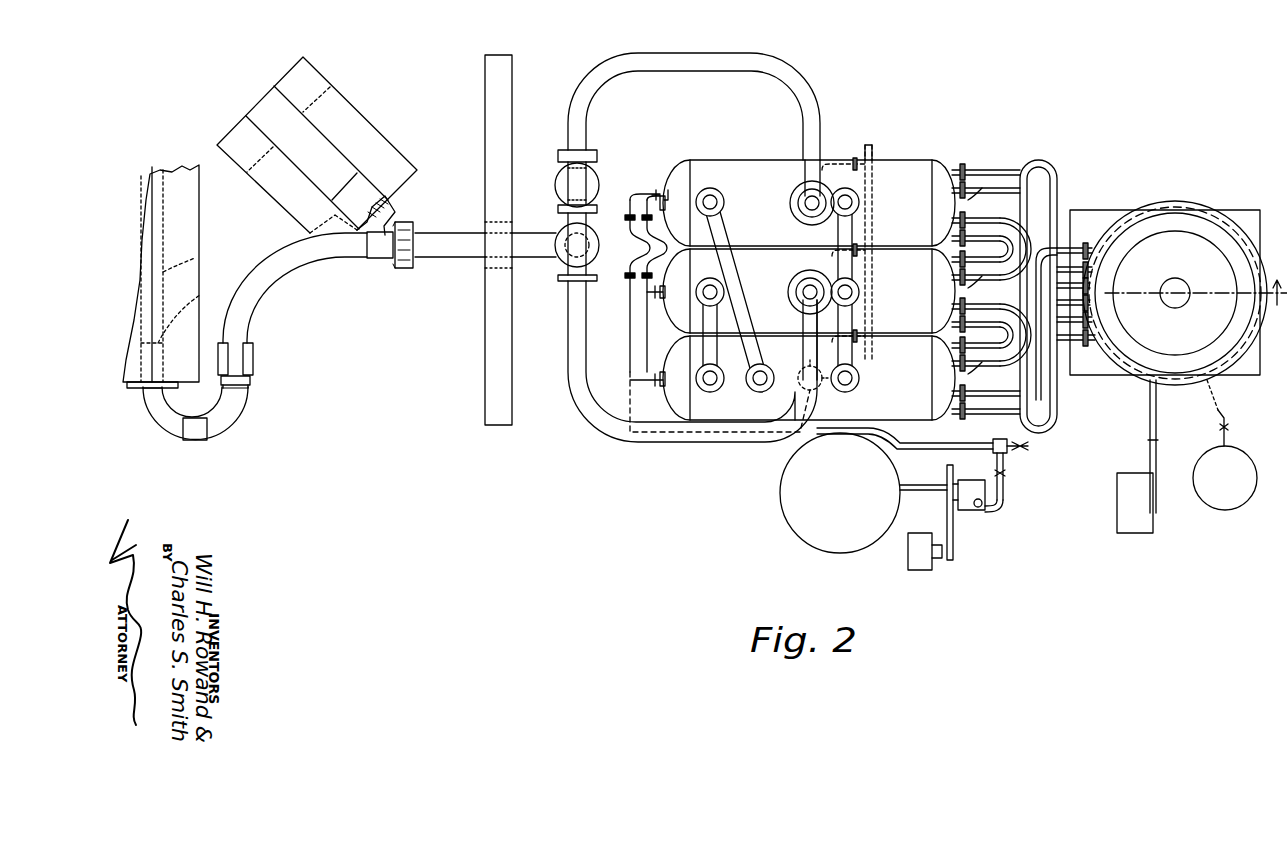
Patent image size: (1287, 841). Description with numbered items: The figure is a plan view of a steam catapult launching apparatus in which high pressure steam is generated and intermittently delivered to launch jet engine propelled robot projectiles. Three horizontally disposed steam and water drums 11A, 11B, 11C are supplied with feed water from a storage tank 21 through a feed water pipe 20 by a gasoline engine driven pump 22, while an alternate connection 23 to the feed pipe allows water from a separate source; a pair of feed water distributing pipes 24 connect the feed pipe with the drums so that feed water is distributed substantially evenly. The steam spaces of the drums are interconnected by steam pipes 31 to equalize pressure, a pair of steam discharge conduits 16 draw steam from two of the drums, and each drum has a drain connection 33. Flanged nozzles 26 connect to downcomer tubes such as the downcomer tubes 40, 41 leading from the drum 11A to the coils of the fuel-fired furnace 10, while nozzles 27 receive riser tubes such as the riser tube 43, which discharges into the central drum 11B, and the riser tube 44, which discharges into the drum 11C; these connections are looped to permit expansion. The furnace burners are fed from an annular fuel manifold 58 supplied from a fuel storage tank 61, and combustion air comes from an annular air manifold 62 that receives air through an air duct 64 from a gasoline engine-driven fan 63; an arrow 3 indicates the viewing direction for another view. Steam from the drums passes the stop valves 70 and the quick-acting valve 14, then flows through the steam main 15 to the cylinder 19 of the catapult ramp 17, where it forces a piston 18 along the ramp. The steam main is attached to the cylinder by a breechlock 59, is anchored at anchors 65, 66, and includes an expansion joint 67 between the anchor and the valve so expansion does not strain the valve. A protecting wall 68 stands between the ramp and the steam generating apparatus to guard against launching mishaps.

The direction arrow 3 is at (1273, 307).
The fuel-fired furnace 10 is at (1190, 224).
The outer drum 11A is at (918, 219).
The centrally located drum 11B is at (918, 304).
The outer drum 11C is at (809, 378).
The quick-acting valve 14 is at (593, 233).
The steam main 15 is at (275, 272).
The steam discharge conduits 16 is at (711, 63).
The catapult ramp 17 is at (183, 222).
The piston 18 is at (184, 312).
The cylinder 19 is at (196, 258).
The feed water pipe 20 is at (736, 434).
The storage tank 21 is at (781, 513).
The gasoline engine driven pump 22 is at (968, 507).
The alternate connection 23 is at (1008, 455).
The feed water distributing pipes 24 is at (628, 337).
The flanged nozzles 26 is at (999, 288).
The nozzles 27 is at (962, 164).
The steam pipes 31 is at (738, 229).
The drain connection 33 is at (822, 388).
The downcomer tube 40 is at (973, 186).
The downcomer tube 41 is at (982, 218).
The riser tube 43 is at (1050, 165).
The riser tube 44 is at (992, 414).
The annular fuel manifold 58 is at (1180, 203).
The breechlock 59 is at (132, 390).
The fuel storage tank 61 is at (1225, 511).
The annular air manifold 62 is at (1188, 382).
The gasoline engine-driven fan 63 is at (1143, 534).
The air duct 64 is at (1150, 418).
The anchor 65 is at (255, 357).
The anchor 66 is at (371, 139).
The expansion joint 67 is at (402, 270).
The protecting wall 68 is at (486, 346).
The stop valves 70 is at (598, 173).